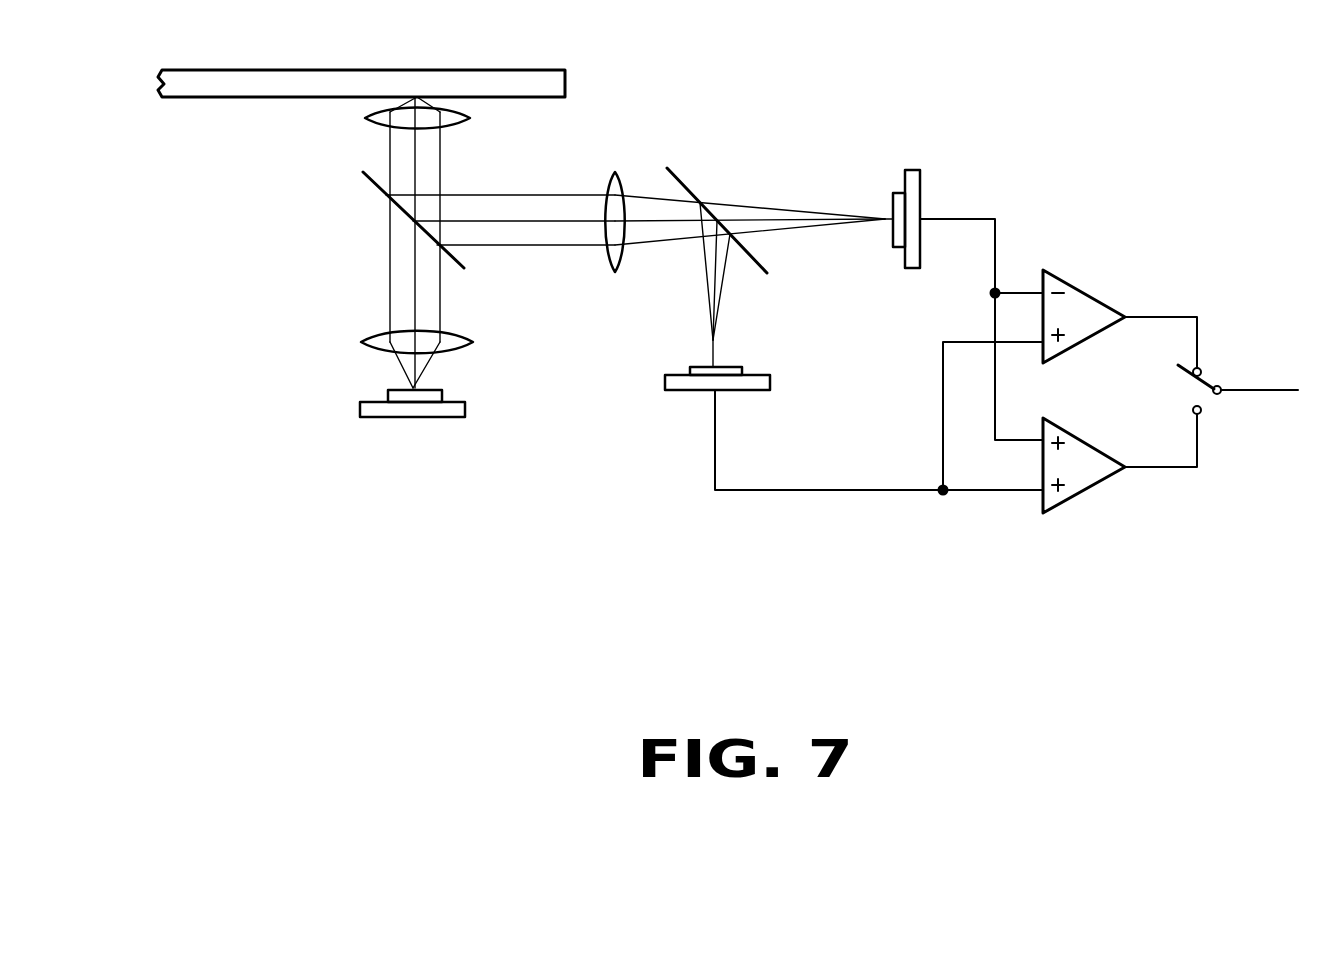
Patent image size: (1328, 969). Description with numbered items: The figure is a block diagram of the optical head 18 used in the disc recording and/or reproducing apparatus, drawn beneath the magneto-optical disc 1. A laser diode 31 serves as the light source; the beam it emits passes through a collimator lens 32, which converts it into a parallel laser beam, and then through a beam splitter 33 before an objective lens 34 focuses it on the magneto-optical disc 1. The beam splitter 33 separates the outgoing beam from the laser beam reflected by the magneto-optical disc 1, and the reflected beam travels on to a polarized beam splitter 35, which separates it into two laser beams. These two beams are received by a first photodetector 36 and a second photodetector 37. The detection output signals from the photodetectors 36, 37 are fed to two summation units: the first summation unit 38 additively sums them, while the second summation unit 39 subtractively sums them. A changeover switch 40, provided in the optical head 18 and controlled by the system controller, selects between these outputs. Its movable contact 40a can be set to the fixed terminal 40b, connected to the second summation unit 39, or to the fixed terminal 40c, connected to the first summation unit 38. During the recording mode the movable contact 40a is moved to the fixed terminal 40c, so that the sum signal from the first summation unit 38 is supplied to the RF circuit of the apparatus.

The magneto-optical disc 1 is at (223, 85).
The optical head 18 is at (631, 117).
The laser diode 31 is at (360, 407).
The collimator lens 32 is at (365, 342).
The beam splitter 33 is at (372, 187).
The objective lens 34 is at (384, 126).
The polarized beam splitter 35 is at (683, 181).
The first photodetector 36 is at (922, 184).
The second photodetector 37 is at (665, 385).
The first summation unit 38 is at (1085, 452).
The second summation unit 39 is at (1085, 300).
The changeover switch 40 is at (1240, 373).
The movable contact 40a is at (1210, 385).
The fixed terminal 40b is at (1200, 368).
The fixed terminal 40c is at (1222, 408).